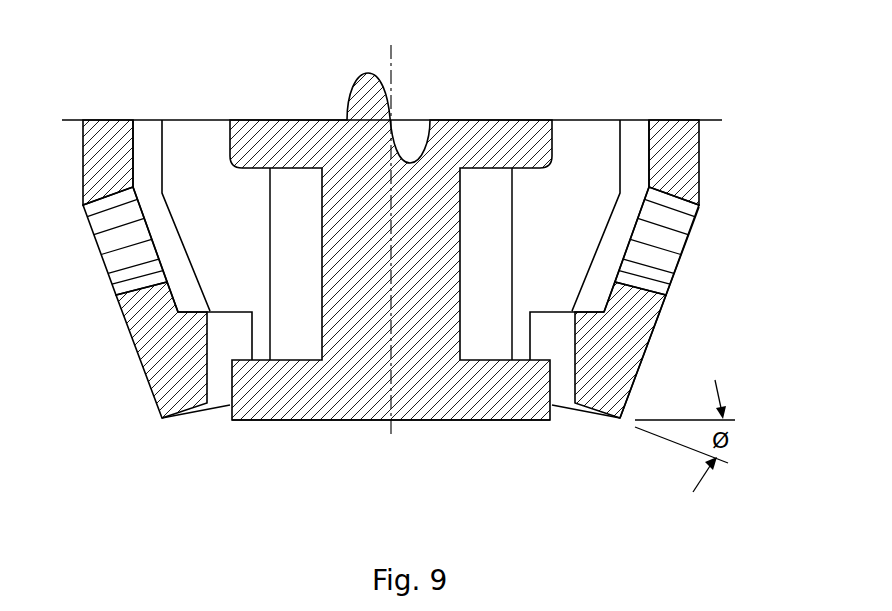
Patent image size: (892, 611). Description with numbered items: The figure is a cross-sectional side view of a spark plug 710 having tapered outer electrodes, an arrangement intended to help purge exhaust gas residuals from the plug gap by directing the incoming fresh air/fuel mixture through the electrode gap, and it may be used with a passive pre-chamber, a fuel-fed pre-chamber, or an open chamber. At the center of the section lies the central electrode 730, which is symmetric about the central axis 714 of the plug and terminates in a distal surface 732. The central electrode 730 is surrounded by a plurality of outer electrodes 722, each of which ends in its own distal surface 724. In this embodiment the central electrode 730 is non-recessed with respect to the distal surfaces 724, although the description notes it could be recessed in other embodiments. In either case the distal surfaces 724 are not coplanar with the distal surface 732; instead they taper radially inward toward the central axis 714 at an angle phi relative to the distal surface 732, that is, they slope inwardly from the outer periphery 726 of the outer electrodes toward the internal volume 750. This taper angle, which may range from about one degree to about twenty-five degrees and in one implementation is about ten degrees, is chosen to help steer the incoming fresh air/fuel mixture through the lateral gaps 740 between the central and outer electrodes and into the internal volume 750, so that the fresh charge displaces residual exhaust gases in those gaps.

The spark plug 710 is at (346, 442).
The central axis 714 is at (391, 58).
The outer electrodes 722 is at (137, 352).
The distal surface 724 is at (186, 424).
The outer periphery 726 is at (657, 320).
The central electrode 730 is at (268, 428).
The distal surface 732 is at (448, 420).
The lateral gaps 740 is at (220, 392).
The internal volume 750 is at (261, 233).